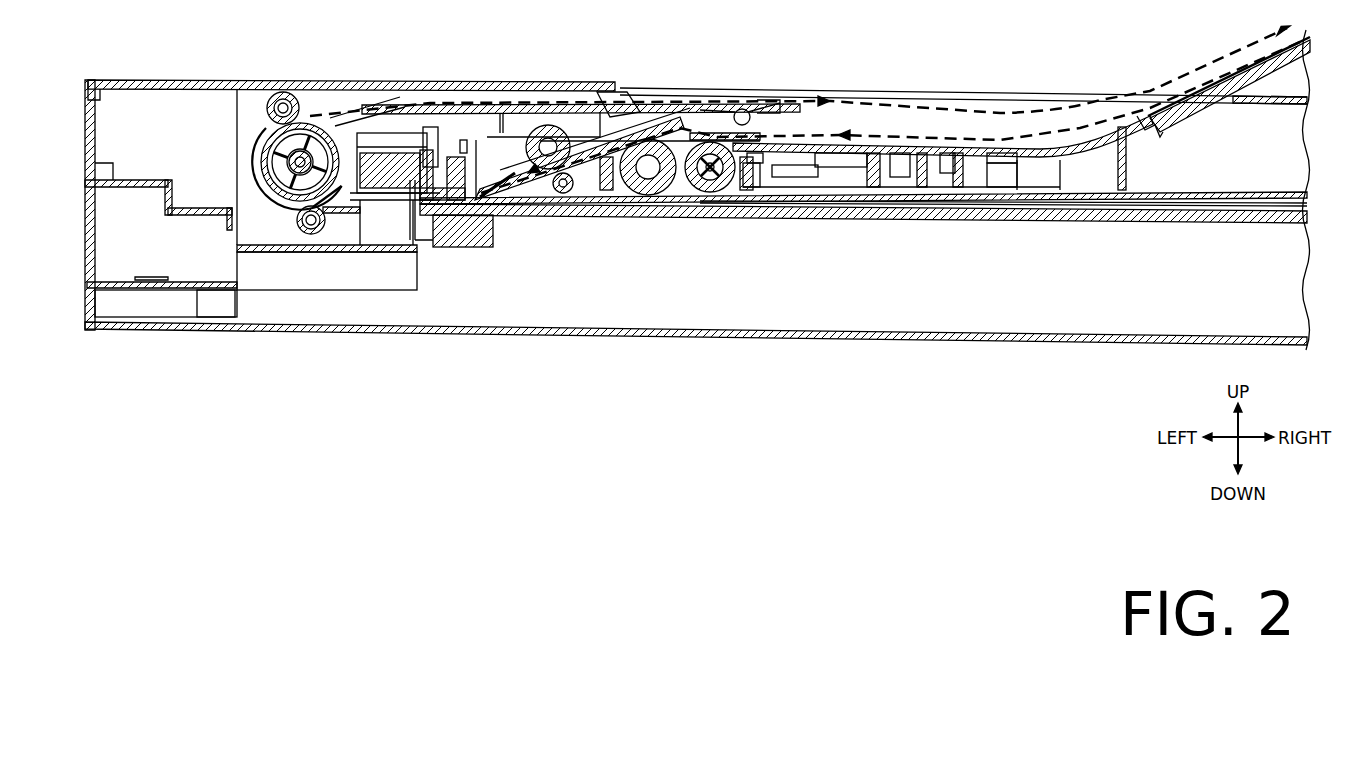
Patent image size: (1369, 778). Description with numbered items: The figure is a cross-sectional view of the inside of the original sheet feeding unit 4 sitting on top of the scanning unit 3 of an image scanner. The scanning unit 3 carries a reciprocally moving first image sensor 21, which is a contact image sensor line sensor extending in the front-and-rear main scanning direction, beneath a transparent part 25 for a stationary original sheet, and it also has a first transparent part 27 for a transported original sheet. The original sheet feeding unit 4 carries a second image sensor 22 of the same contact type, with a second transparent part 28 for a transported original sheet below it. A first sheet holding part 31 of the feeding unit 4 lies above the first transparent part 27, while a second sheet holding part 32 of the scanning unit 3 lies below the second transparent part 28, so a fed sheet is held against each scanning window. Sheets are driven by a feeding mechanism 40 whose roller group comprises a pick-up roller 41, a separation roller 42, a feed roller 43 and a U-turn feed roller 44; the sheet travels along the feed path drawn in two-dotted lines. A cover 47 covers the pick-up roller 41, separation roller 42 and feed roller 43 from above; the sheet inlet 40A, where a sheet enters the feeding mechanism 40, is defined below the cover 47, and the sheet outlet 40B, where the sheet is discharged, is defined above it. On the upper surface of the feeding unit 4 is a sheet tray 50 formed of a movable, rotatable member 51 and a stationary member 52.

The scanning unit 3 is at (180, 330).
The original sheet feeding unit 4 is at (188, 80).
The first image sensor 21 is at (467, 243).
The second image sensor 22 is at (398, 163).
The transparent part for stationary original sheet 25 is at (600, 200).
The first transparent part 27 is at (420, 210).
The second transparent part 28 is at (368, 187).
The first sheet holding part 31 is at (477, 157).
The second sheet holding part 32 is at (398, 213).
The feeding mechanism 40 is at (717, 221).
The sheet inlet 40A is at (743, 133).
The sheet outlet 40B is at (607, 98).
The pick-up roller 41 is at (707, 196).
The separation roller 42 is at (648, 198).
The feed roller 43 is at (560, 205).
The U-turn feed roller 44 is at (310, 112).
The cover 47 is at (733, 107).
The sheet tray 50 is at (1118, 88).
The movable member 51 is at (1197, 123).
The stationary member 52 is at (1097, 140).